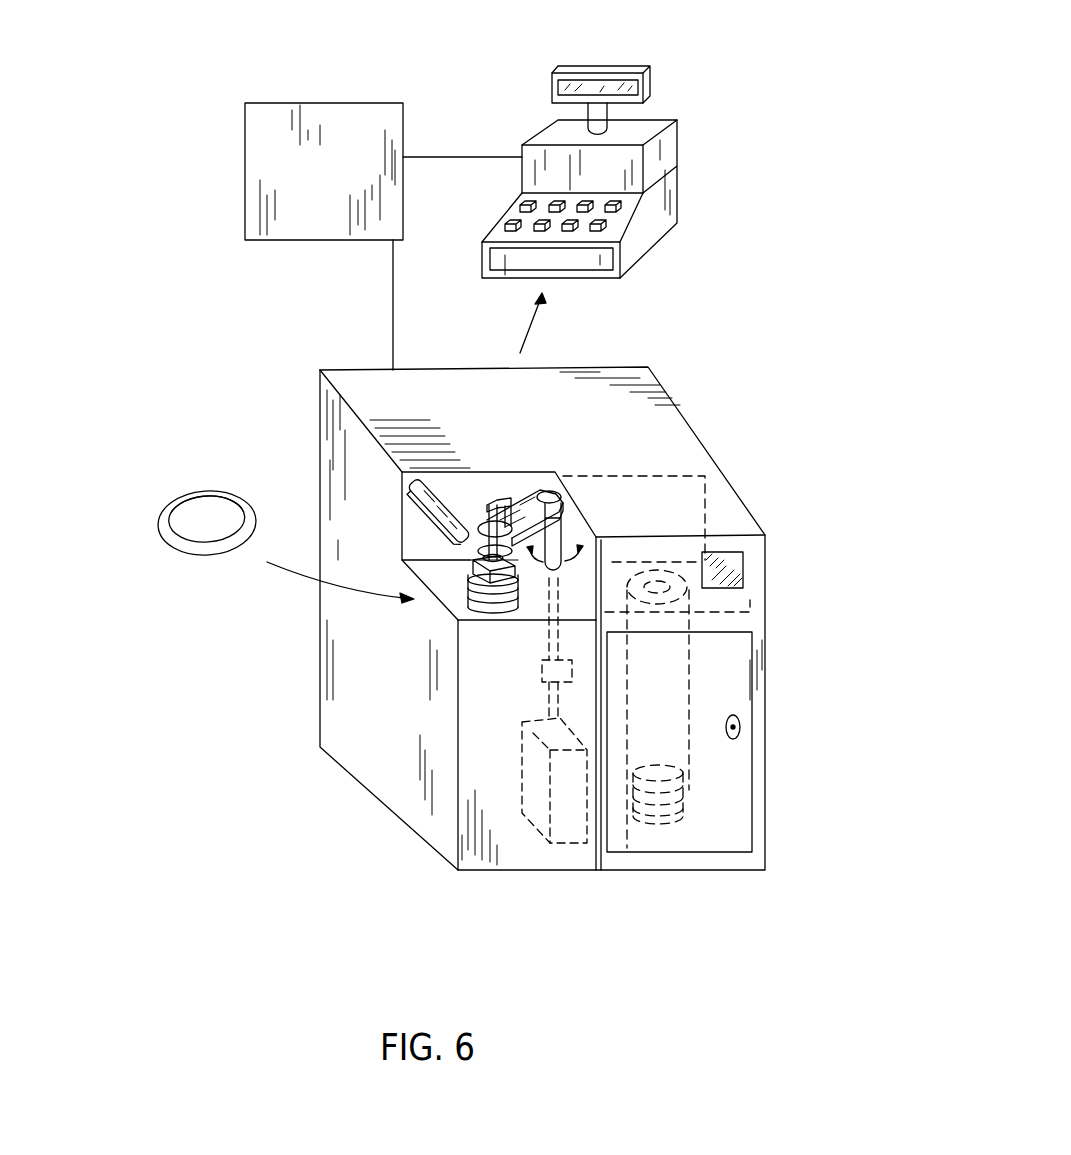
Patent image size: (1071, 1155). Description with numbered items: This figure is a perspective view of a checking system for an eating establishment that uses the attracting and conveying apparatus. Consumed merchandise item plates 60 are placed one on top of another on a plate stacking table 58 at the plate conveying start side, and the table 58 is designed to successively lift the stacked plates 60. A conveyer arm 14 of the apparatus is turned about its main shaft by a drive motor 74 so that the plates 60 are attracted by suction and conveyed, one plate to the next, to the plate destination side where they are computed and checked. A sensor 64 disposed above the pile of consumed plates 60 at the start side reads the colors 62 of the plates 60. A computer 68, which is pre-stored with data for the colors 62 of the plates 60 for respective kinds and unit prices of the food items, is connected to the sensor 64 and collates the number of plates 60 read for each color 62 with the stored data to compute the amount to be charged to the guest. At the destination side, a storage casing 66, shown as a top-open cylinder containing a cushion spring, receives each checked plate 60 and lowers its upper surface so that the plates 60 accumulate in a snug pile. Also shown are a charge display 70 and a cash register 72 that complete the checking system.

The conveyer arm 14 is at (520, 495).
The plate stacking table 58 is at (525, 608).
The merchandise item plate 60 is at (460, 603).
The colors 62 is at (180, 497).
The sensor 64 is at (463, 545).
The storage casing 66 is at (692, 700).
The computer 68 is at (253, 145).
The charge display 70 is at (747, 568).
The cash register 72 is at (673, 150).
The drive motor 74 is at (567, 828).